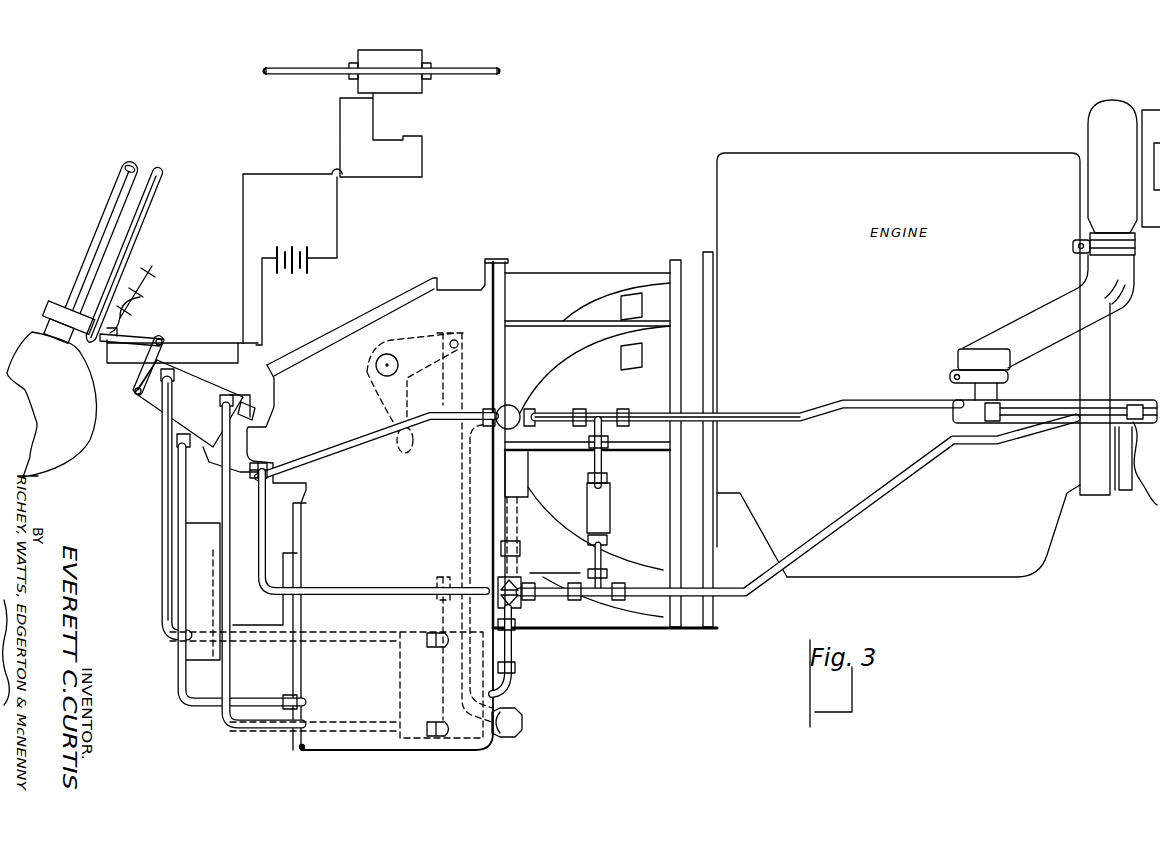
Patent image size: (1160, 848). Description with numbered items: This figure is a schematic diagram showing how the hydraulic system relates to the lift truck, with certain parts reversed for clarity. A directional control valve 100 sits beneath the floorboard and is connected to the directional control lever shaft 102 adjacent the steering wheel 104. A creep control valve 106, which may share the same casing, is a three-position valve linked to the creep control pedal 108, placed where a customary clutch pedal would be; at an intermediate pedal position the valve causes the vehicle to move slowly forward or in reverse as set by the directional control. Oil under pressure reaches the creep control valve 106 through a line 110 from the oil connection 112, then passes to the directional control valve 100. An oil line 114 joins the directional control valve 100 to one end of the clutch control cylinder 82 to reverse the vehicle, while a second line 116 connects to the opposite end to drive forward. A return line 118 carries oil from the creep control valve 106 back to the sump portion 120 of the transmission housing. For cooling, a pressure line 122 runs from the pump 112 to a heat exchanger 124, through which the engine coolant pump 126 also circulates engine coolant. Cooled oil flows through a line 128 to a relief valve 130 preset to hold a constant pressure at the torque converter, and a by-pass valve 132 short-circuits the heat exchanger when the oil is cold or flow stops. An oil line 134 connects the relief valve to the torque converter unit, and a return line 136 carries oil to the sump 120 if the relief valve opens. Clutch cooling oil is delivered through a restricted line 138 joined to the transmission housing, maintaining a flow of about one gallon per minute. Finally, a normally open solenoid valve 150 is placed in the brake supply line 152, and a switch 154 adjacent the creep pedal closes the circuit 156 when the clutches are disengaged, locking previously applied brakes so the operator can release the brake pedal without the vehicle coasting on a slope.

The clutch control cylinder 82 is at (420, 686).
The directional control valve 100 is at (212, 391).
The directional control lever shaft 102 is at (160, 186).
The steering wheel 104 is at (140, 168).
The creep control valve 106 is at (190, 414).
The creep control pedal 108 is at (148, 275).
The line 110 is at (343, 449).
The oil connection 112 is at (507, 406).
The oil line 114 is at (221, 505).
The second line 116 is at (160, 460).
The return line 118 is at (177, 490).
The sump portion 120 is at (300, 735).
The pressure line 122 is at (738, 418).
The heat exchanger 124 is at (1025, 400).
The engine coolant pump 126 is at (1088, 132).
The line 128 is at (875, 495).
The relief valve 130 is at (523, 605).
The by-pass valve 132 is at (607, 497).
The oil line 134 is at (520, 512).
The return line 136 is at (512, 650).
The line 138 is at (353, 584).
The solenoid valve 150 is at (410, 56).
The supply line 152 is at (455, 76).
The switch 154 is at (122, 334).
The circuit 156 is at (241, 247).